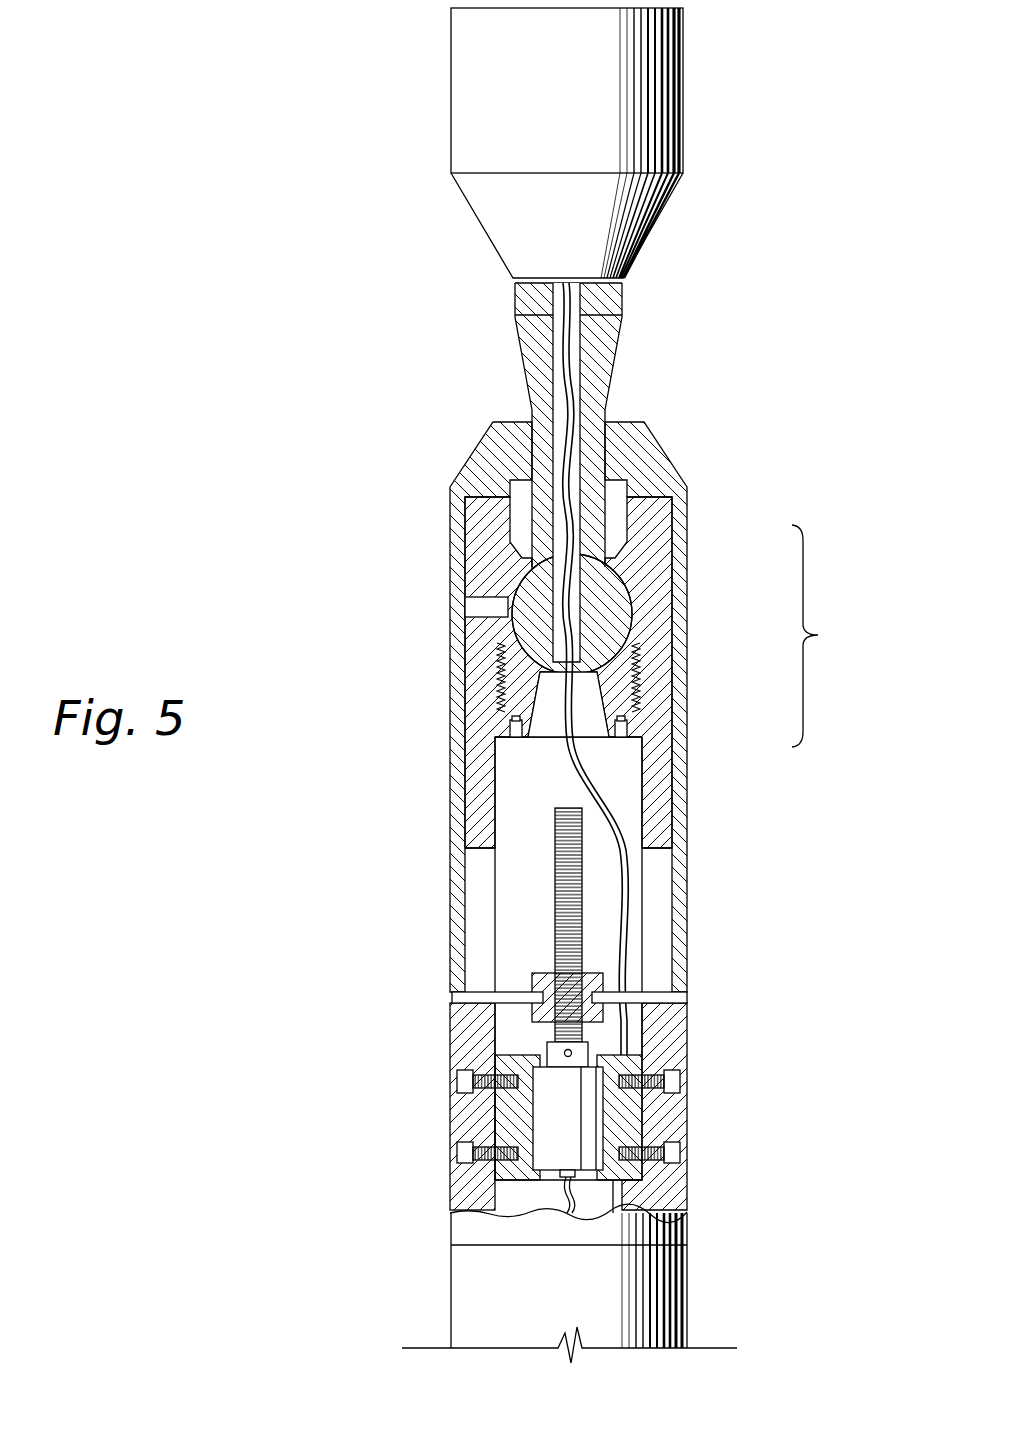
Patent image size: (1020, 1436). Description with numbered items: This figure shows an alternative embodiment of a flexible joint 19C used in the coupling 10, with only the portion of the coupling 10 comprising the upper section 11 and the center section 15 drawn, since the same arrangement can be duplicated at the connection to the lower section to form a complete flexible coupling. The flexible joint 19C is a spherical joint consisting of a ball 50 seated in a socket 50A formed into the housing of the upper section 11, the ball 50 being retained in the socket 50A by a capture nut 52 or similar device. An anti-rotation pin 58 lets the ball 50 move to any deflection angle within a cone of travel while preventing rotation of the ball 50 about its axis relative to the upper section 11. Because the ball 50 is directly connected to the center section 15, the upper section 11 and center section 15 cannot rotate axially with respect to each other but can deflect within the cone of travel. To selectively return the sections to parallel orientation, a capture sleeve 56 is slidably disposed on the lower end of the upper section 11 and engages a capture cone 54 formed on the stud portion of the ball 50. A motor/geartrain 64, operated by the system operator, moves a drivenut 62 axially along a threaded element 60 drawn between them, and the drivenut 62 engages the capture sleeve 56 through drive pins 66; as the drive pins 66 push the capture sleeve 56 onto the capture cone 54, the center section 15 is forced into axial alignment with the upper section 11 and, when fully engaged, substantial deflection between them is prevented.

The coupling 10 is at (303, 406).
The upper section 11 is at (450, 1228).
The center section 15 is at (686, 93).
The flexible joint 19C is at (838, 636).
The ball 50 is at (626, 608).
The socket 50A is at (612, 562).
The capture nut 52 is at (627, 693).
The capture cone 54 is at (621, 349).
The capture sleeve 56 is at (450, 747).
The anti-rotation pin 58 is at (470, 607).
The threaded rod 60 is at (567, 883).
The drivenut 62 is at (541, 973).
The motor/geartrain 64 is at (545, 1125).
The drive pins 66 is at (457, 999).